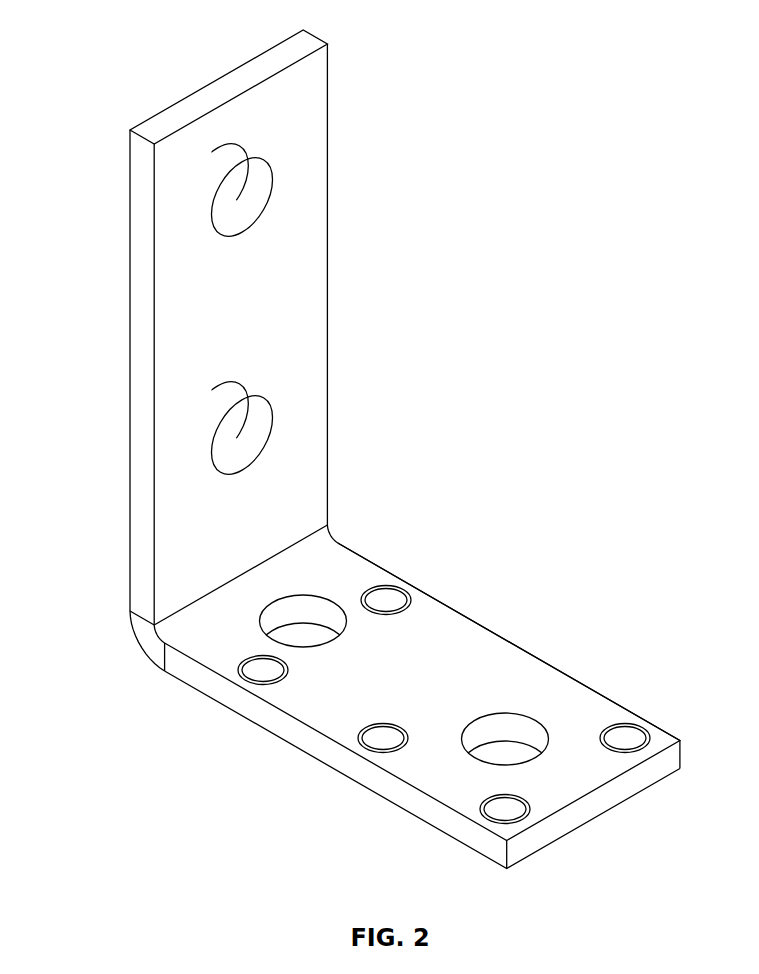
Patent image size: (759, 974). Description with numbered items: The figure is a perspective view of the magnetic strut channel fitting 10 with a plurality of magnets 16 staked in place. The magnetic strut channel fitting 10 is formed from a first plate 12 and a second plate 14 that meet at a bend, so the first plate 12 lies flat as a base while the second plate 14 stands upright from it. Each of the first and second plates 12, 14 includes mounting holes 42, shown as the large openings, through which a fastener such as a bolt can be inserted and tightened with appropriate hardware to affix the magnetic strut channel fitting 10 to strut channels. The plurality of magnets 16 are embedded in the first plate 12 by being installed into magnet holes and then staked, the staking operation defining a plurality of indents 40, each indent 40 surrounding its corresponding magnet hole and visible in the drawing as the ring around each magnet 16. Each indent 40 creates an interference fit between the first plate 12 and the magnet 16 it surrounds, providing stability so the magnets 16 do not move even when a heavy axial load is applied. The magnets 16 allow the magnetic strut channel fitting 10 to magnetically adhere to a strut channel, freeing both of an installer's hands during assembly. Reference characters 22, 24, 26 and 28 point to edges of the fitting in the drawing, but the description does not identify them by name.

The magnetic strut channel fitting 10 is at (98, 40).
The first plate 12 is at (330, 715).
The second plate 14 is at (308, 360).
The magnets 16 is at (386, 596).
The front edge 22 is at (422, 807).
The rear edge 24 is at (503, 632).
The first side edge 26 is at (138, 340).
The second side edge 28 is at (327, 253).
The indents 40 is at (412, 600).
The mounting holes 42 is at (227, 197).